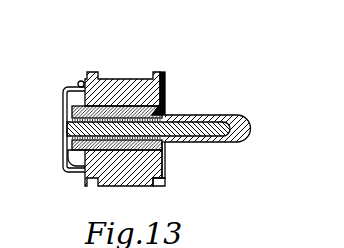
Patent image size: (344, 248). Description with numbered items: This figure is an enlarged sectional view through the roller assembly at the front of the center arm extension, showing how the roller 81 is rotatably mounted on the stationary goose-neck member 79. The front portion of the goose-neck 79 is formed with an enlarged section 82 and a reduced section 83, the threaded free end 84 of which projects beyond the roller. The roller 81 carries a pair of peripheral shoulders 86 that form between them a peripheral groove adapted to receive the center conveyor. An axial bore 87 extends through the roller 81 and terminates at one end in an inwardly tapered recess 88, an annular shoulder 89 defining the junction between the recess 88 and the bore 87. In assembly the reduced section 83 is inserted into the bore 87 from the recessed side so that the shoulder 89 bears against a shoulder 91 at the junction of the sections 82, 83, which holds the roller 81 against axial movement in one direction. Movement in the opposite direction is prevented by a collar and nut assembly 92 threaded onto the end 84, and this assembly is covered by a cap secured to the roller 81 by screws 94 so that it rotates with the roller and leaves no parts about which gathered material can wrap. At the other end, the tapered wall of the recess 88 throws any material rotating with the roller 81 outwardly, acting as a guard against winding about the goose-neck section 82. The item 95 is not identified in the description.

The goose-neck member 79 is at (206, 115).
The roller 81 is at (130, 79).
The enlarged section 82 is at (165, 143).
The reduced section 83 is at (102, 115).
The threaded free end 84 is at (72, 130).
The peripheral shoulders 86 is at (163, 73).
The axial bore 87 is at (131, 142).
The tapered recess 88 is at (167, 165).
The annular shoulder 89 is at (168, 114).
The shoulder 91 is at (166, 93).
The collar and nut assembly 92 is at (65, 160).
The screws 94 is at (80, 82).
The end cap 95 is at (63, 96).